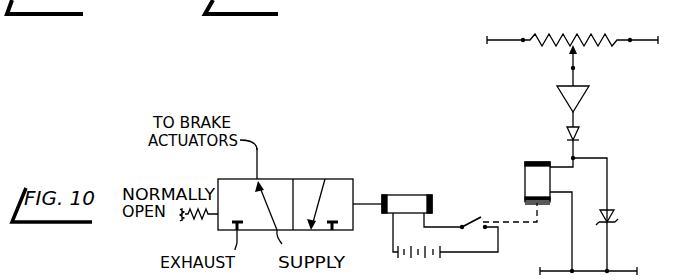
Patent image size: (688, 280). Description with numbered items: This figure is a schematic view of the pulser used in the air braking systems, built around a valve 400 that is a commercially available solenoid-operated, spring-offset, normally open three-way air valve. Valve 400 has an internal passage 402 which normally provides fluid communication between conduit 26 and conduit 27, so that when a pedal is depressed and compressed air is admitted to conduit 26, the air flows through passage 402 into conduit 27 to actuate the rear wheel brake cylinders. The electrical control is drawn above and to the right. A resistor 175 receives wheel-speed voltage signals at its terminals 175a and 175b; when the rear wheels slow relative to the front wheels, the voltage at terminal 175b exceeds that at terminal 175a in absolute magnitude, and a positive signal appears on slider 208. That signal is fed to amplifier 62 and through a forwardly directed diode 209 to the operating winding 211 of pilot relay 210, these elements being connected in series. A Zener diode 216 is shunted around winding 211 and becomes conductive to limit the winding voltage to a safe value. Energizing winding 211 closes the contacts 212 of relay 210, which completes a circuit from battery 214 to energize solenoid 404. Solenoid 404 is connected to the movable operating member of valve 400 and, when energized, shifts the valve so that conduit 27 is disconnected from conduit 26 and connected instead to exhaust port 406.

The valve 400 is at (350, 173).
The conduit 27 is at (258, 167).
The internal passage 402 is at (267, 208).
The exhaust port 406 is at (235, 242).
The conduit 26 is at (277, 233).
The solenoid 404 is at (423, 194).
The battery 214 is at (419, 257).
The contacts 212 is at (475, 218).
The pilot relay 210 is at (547, 194).
The operating winding 211 is at (525, 178).
The Zener diode 216 is at (613, 220).
The diode 209 is at (565, 133).
The amplifier 62 is at (561, 98).
The slider 208 is at (575, 58).
The resistor 175 is at (573, 38).
The terminal 175a is at (630, 38).
The terminal 175b is at (523, 38).